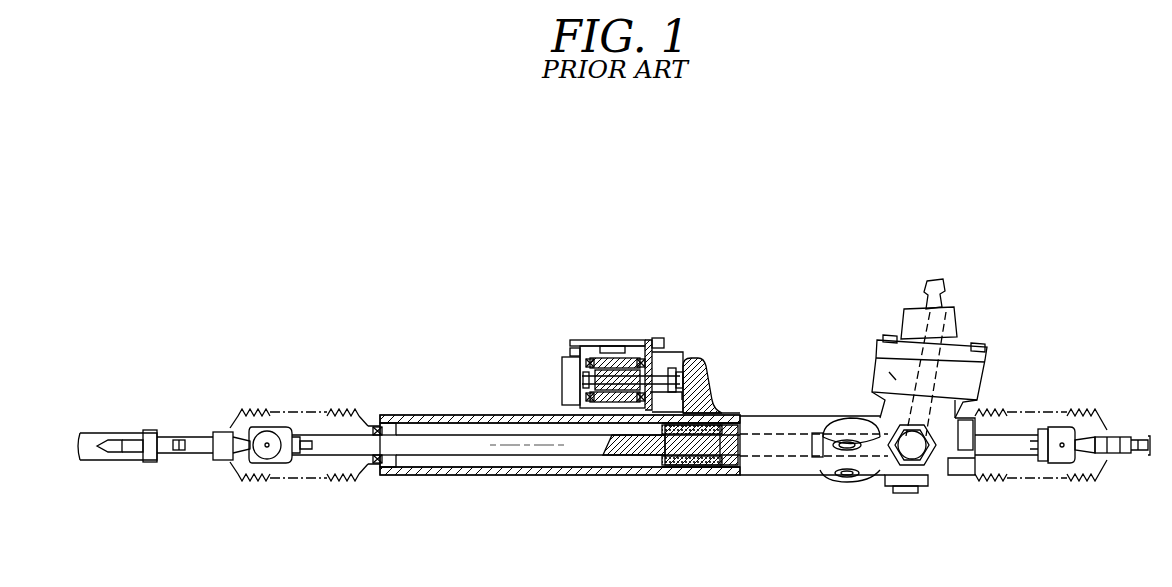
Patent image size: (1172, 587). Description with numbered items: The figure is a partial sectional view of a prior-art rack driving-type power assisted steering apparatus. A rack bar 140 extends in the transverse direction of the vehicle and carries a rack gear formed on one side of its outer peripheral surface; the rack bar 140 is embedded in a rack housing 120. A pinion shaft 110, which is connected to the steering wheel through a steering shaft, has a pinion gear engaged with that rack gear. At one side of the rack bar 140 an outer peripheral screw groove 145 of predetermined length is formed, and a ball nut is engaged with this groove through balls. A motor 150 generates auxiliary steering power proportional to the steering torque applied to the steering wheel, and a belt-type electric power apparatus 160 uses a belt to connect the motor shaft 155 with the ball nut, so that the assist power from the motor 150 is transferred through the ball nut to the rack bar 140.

The pinion shaft 110 is at (927, 285).
The rack housing 120 is at (505, 476).
The rack bar 140 is at (447, 456).
The outer peripheral screw groove 145 is at (627, 457).
The motor 150 is at (608, 338).
The motor shaft 155 is at (665, 368).
The belt-type electric power apparatus 160 is at (677, 417).